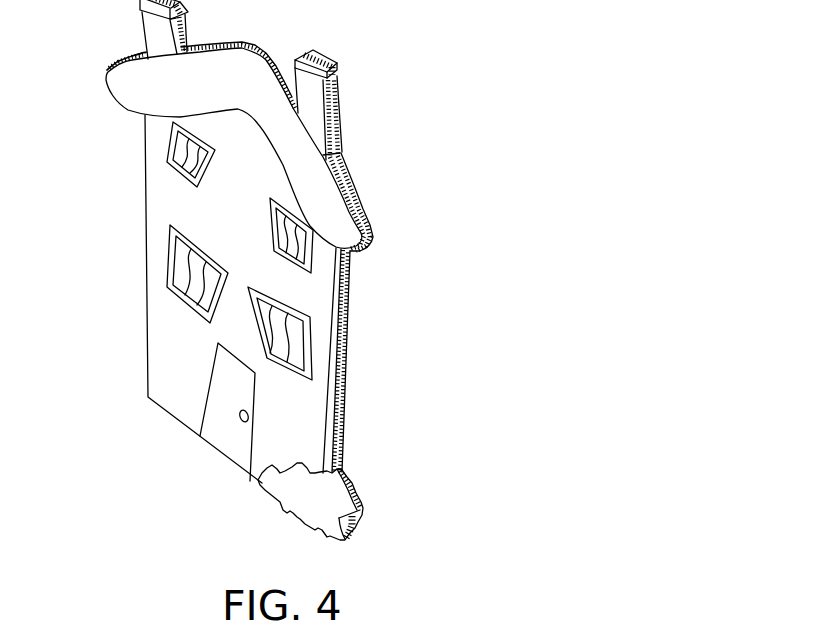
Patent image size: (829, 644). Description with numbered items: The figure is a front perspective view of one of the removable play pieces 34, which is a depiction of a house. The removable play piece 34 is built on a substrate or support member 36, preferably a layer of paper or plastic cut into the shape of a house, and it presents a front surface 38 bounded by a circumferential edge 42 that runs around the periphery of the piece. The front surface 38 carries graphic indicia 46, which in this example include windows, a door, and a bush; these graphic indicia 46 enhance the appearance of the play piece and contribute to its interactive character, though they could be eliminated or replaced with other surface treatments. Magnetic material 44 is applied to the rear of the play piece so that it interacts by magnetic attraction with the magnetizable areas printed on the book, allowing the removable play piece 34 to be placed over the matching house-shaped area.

The removable play piece 34 is at (284, 274).
The substrate or support member 36 is at (343, 172).
The front surface 38 is at (184, 363).
The circumferential edge 42 is at (145, 185).
The magnetic material 44 is at (340, 427).
The graphic indicia 46 is at (167, 278).